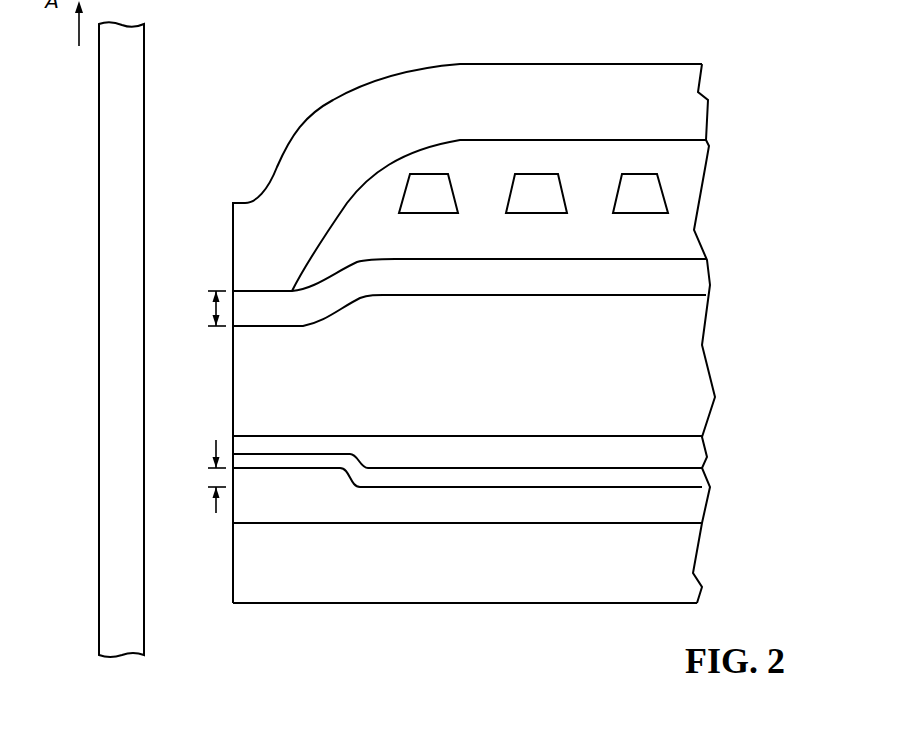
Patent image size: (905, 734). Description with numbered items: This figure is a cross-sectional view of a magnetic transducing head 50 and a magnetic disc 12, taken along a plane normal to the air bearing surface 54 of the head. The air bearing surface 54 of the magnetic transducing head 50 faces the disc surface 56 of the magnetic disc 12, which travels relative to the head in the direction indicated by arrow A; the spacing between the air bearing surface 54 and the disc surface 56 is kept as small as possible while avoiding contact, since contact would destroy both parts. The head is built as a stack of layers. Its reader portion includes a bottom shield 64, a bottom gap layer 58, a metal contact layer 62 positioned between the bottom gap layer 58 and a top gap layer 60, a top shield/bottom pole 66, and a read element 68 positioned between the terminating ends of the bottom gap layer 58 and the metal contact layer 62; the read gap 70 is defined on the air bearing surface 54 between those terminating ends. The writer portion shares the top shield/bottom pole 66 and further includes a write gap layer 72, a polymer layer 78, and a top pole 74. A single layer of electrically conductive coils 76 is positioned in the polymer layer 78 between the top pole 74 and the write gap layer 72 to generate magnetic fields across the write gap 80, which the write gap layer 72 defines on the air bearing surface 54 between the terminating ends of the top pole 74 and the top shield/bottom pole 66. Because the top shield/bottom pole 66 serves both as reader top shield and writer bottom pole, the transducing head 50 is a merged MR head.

The magnetic disc 12 is at (107, 110).
The magnetic transducing head 50 is at (722, 67).
The air bearing surface 54 is at (233, 216).
The disc surface 56 is at (145, 40).
The bottom gap layer 58 is at (575, 518).
The top gap layer 60 is at (575, 466).
The metal contact layer 62 is at (686, 478).
The bottom shield 64 is at (575, 575).
The top shield/bottom pole 66 is at (575, 387).
The read element 68 is at (276, 475).
The read gap 70 is at (198, 483).
The write gap layer 72 is at (575, 292).
The top pole 74 is at (615, 113).
The conductive coil 76 is at (414, 207).
The polymer layer 78 is at (575, 255).
The write gap 80 is at (198, 308).